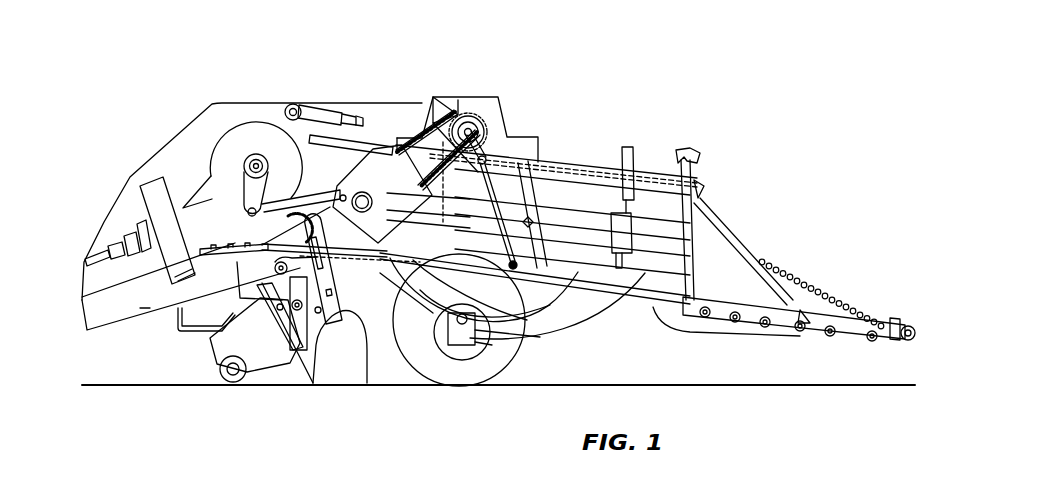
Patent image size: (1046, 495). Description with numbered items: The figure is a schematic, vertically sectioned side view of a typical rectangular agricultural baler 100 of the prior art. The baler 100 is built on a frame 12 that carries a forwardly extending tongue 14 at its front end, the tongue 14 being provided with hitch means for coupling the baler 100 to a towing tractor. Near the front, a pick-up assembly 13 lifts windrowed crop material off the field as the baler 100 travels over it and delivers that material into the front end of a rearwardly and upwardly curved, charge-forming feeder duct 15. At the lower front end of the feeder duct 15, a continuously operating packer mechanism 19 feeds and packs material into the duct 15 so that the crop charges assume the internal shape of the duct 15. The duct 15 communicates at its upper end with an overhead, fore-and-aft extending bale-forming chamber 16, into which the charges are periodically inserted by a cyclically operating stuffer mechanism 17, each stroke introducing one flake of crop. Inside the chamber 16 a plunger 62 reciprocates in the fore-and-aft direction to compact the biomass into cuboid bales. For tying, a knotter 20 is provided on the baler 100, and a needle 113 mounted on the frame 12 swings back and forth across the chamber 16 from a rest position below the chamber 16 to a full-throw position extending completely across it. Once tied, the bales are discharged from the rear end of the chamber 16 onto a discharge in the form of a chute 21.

The agricultural baler 100 is at (687, 98).
The frame 12 is at (387, 258).
The pick-up assembly 13 is at (276, 382).
The tongue 14 is at (140, 310).
The feeder duct 15 is at (337, 340).
The bale-forming chamber 16 is at (577, 193).
The stuffer mechanism 17 is at (367, 383).
The packer mechanism 19 is at (313, 383).
The knotter 20 is at (446, 114).
The chute 21 is at (838, 265).
The plunger 62 is at (378, 175).
The needle 113 is at (510, 317).